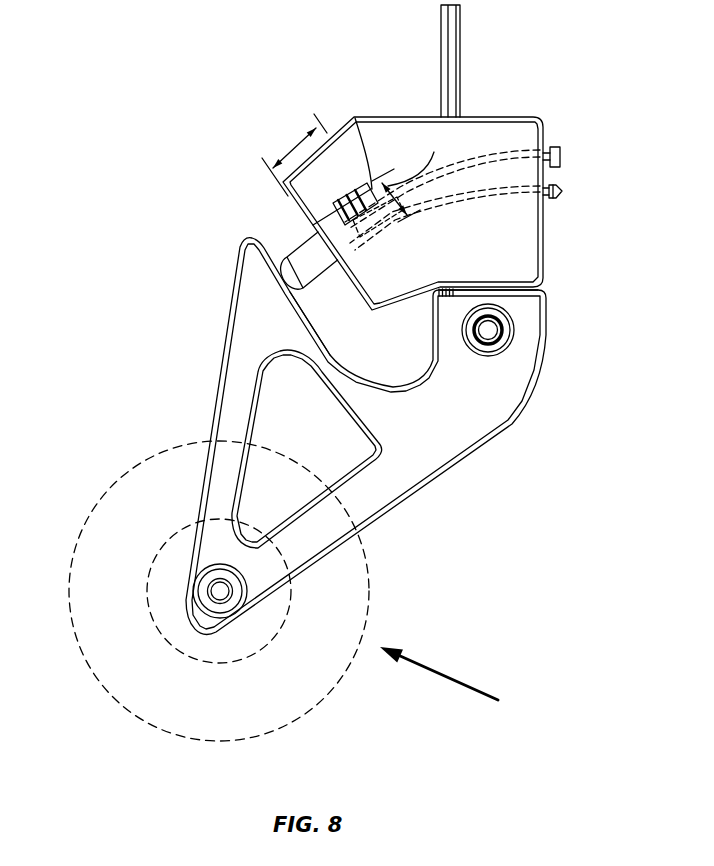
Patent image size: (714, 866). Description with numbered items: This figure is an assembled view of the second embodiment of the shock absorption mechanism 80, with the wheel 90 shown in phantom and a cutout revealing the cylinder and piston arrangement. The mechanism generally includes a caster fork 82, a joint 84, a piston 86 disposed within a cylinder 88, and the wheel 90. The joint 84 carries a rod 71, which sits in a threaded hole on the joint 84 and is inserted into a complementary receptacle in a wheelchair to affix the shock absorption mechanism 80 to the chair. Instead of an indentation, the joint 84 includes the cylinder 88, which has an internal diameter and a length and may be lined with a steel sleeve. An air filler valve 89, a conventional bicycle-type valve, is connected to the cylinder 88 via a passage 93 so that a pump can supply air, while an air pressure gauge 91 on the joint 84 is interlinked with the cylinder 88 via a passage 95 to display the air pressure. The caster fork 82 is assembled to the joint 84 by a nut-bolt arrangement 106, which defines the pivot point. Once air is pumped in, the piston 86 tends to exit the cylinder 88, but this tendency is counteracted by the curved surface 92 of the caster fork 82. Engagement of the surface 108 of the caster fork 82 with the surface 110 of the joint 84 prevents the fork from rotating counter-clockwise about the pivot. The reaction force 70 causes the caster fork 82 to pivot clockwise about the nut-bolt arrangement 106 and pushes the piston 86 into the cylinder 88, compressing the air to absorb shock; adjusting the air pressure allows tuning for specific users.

The shock absorption mechanism 80 is at (226, 92).
The rod 71 is at (462, 60).
The joint 84 is at (512, 236).
The piston 86 is at (292, 236).
The cylinder 88 is at (387, 254).
The passage 95 is at (503, 147).
The passage 93 is at (506, 203).
The air pressure gauge 91 is at (567, 156).
The air filler valve 89 is at (568, 193).
The surface 108 is at (508, 288).
The surface 110 is at (525, 302).
The caster fork 82 is at (483, 412).
The surface 92 is at (322, 336).
The nut-bolt arrangement 106 is at (490, 331).
The wheel 90 is at (110, 503).
The reaction force 70 is at (456, 686).